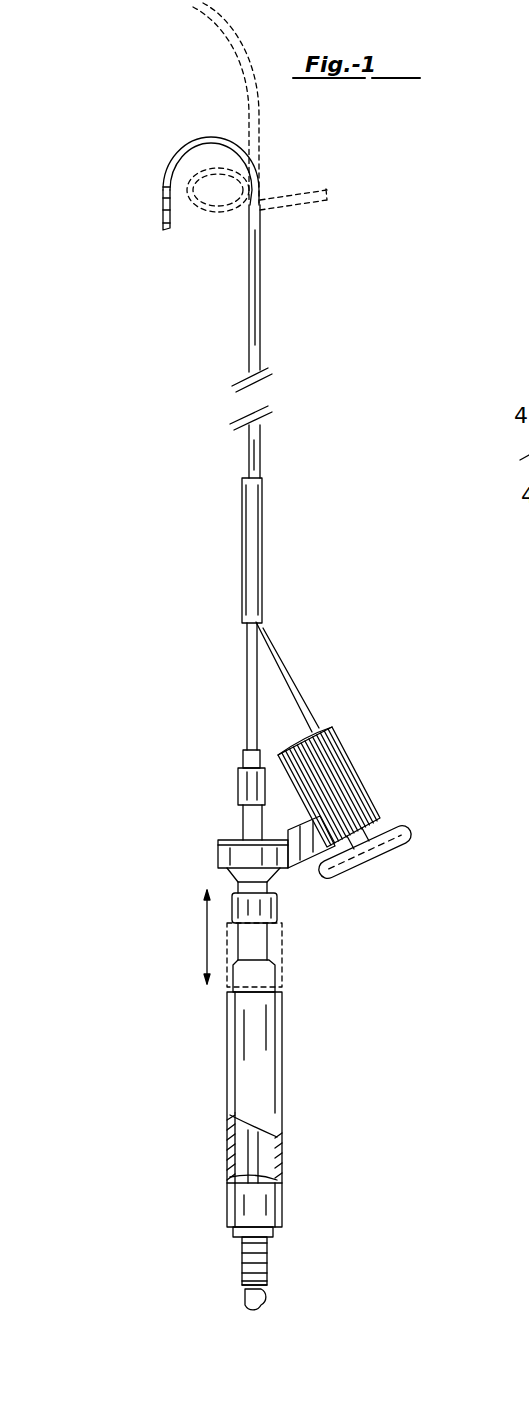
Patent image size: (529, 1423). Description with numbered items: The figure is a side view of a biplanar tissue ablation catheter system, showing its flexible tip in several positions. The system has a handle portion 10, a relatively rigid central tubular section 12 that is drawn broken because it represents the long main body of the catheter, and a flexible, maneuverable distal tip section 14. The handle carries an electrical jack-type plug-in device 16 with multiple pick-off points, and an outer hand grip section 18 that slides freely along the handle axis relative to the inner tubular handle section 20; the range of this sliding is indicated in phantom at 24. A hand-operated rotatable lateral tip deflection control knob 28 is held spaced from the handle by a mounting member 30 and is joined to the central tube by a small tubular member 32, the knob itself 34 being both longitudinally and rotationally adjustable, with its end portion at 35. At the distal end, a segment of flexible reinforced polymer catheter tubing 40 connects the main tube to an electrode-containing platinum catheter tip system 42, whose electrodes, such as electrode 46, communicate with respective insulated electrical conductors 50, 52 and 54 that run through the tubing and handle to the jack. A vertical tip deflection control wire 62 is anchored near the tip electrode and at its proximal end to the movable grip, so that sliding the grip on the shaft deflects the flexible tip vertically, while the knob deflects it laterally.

The handle portion 10 is at (296, 1106).
The central tubular section 12 is at (272, 303).
The flexible distal maneuverable tip section 14 is at (176, 138).
The electrical jack-type plug-in device 16 is at (238, 1304).
The outer hand grip section 18 is at (238, 1050).
The inner tubular handle section 20 is at (217, 853).
The distance of adjustment 24 is at (283, 950).
The lateral tip deflection control knob 28 is at (403, 777).
The mounting member 30 is at (300, 862).
The tubular member 32 is at (287, 640).
The knob 34 is at (362, 737).
The stopcock body top 35 is at (317, 727).
The flexible reinforced polymer catheter tubing 40 is at (234, 33).
The electrode-containing platinum catheter tip system 42 is at (192, 8).
The electrode 46 is at (522, 459).
The insulated electrical conductor 50 is at (267, 1247).
The insulated electrical conductor 52 is at (267, 1258).
The insulated electrical conductor 54 is at (267, 1273).
The vertical tip deflection control wire 62 is at (257, 1163).